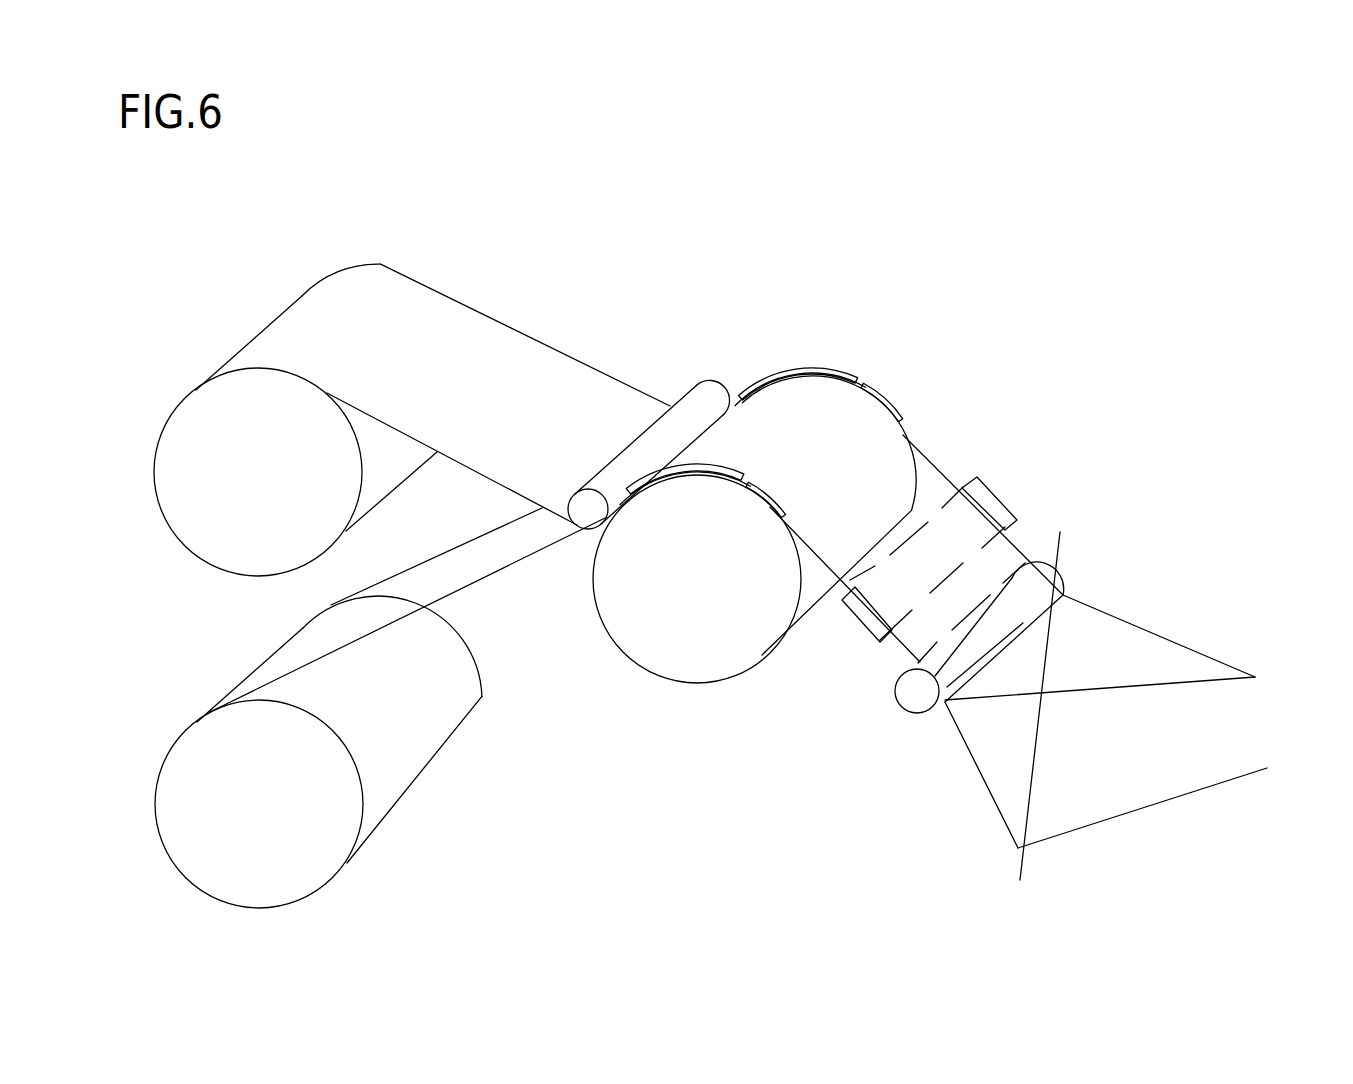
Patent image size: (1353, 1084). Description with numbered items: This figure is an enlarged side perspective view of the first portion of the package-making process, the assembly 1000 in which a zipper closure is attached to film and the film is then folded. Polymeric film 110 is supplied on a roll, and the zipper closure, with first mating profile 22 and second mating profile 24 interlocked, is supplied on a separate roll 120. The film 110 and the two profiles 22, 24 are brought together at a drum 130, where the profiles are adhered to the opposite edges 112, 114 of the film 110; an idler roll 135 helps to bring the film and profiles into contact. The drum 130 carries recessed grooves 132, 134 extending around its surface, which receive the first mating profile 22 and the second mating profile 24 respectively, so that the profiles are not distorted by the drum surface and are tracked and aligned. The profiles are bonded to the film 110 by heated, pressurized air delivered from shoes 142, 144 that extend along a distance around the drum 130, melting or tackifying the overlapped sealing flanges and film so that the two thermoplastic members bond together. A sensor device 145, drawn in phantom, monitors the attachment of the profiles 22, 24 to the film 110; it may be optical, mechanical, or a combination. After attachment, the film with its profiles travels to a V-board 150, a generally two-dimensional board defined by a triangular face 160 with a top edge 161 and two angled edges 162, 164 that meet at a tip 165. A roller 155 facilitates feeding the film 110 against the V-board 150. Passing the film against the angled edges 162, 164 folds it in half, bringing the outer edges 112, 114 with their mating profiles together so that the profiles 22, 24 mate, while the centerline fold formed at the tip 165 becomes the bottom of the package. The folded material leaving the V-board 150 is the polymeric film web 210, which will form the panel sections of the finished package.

The web converting system 1000 is at (920, 320).
The polymeric film 110 is at (247, 343).
The roll 120 is at (158, 830).
The edge of film 114 is at (485, 308).
The edge of film 112 is at (480, 475).
The second mating profile 24 is at (420, 563).
The first mating profile 22 is at (500, 577).
The idler roll 135 is at (709, 380).
The drum 130 is at (692, 683).
The shoe 142 is at (703, 480).
The recessed groove 132 is at (778, 515).
The shoe 144 is at (795, 372).
The recessed groove 134 is at (893, 422).
The sensor device 145 is at (1007, 497).
The V-board 150 is at (977, 767).
The triangular face 160 is at (1003, 679).
The roller 155 is at (912, 708).
The top edge 161 is at (1058, 689).
The angled edge 164 is at (1060, 627).
The polymeric film web 210 is at (1142, 626).
The angled edge 162 is at (1010, 834).
The tip 165 is at (1037, 911).